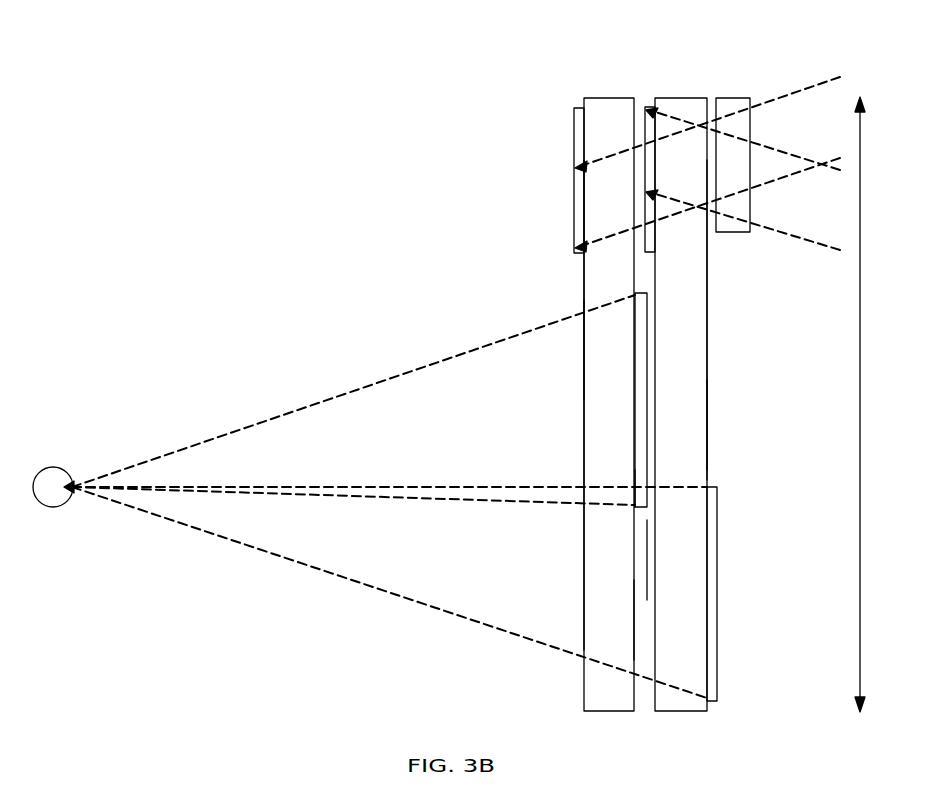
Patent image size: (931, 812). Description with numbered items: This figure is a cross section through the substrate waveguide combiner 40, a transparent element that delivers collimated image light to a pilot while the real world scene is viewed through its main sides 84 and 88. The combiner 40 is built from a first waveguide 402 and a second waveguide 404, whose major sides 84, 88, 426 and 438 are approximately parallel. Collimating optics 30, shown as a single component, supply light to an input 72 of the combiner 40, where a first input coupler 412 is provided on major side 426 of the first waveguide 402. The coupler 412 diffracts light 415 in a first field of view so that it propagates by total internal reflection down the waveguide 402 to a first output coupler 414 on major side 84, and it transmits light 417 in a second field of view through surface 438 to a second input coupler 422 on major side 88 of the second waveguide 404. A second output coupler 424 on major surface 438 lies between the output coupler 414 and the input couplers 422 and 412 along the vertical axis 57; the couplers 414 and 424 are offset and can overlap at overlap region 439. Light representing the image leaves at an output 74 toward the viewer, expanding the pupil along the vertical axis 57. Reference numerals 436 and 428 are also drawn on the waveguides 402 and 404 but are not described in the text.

The substrate waveguide combiner 40 is at (395, 86).
The output 74 is at (519, 572).
The second waveguide 404 is at (598, 98).
The second input coupler 422 is at (577, 127).
The first input coupler 412 is at (650, 106).
The first waveguide 402 is at (678, 98).
The collimating optics 30 is at (742, 165).
The input 72 is at (712, 96).
The second output coupler 424 is at (636, 357).
The first output coupler 414 is at (710, 510).
The light in second field of view 417 is at (810, 87).
The light in first field of view 415 is at (810, 275).
The major side 88 is at (588, 282).
The major side 84 is at (700, 290).
The eye-facing surface 436 is at (583, 342).
The world-facing surface 428 is at (707, 423).
The overlap region 439 is at (635, 497).
The major side 426 is at (652, 552).
The major surface 438 is at (637, 600).
The vertical axis 57 is at (860, 347).